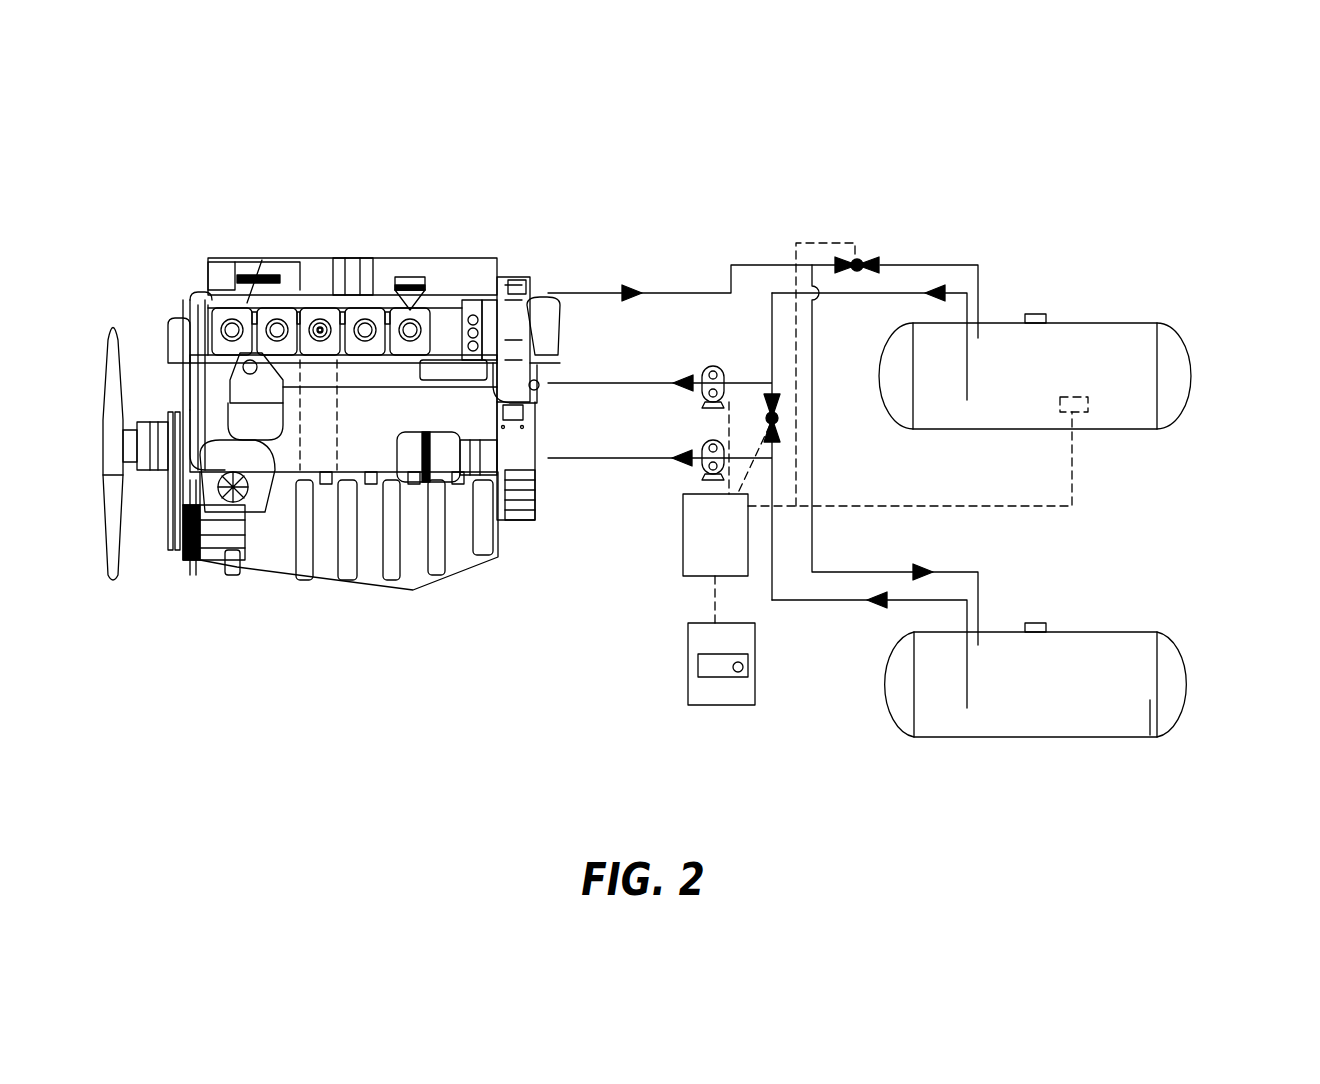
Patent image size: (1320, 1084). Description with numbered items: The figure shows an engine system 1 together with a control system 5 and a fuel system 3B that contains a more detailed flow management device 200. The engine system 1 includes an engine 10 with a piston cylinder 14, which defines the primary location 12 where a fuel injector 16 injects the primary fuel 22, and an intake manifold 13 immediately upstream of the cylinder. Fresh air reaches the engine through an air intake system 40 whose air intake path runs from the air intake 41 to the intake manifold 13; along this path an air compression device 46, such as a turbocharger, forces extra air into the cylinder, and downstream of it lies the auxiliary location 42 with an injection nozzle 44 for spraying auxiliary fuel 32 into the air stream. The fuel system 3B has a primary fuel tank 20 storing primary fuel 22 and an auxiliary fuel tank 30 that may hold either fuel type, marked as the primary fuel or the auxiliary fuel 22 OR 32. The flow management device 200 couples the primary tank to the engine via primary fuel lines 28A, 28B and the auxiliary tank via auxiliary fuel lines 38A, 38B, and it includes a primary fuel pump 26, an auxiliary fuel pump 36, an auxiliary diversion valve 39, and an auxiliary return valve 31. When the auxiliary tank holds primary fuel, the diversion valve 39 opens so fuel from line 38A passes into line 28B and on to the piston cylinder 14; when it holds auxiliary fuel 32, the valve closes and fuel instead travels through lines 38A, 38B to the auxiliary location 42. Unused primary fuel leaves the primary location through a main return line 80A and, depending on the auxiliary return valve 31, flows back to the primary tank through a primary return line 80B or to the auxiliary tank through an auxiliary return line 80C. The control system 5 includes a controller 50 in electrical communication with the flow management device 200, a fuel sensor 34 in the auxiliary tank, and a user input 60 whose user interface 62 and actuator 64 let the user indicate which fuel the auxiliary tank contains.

The engine system 1 is at (232, 128).
The fuel system 3B is at (738, 125).
The flow management device 200 is at (712, 192).
The control system 5 is at (625, 538).
The engine 10 is at (222, 298).
The primary location 12 is at (322, 330).
The intake manifold 13 is at (387, 300).
The piston cylinder 14 is at (320, 435).
The fuel injector 16 is at (322, 330).
The air intake system 40 is at (520, 290).
The air intake 41 is at (517, 290).
The auxiliary location 42 is at (530, 385).
The injection nozzle 44 is at (531, 385).
The air compression device 46 is at (543, 290).
The primary fuel tank 20 is at (1128, 632).
The primary fuel 22 is at (1128, 737).
The primary fuel or auxiliary fuel 22 OR 32 is at (1135, 418).
The auxiliary fuel 32 is at (1150, 435).
The auxiliary fuel tank 30 is at (1135, 323).
The fuel sensor 34 is at (1067, 412).
The auxiliary return valve 31 is at (860, 258).
The auxiliary fuel pump 36 is at (710, 372).
The auxiliary diversion valve 39 is at (768, 412).
The primary fuel pump 26 is at (710, 466).
The primary fuel line 28A is at (790, 605).
The primary fuel line 28B is at (634, 458).
The auxiliary fuel line 38A is at (910, 295).
The auxiliary fuel line 38B is at (652, 383).
The main return line 80A is at (660, 292).
The primary return line 80B is at (814, 470).
The auxiliary return line 80C is at (950, 262).
The controller 50 is at (698, 577).
The user input 60 is at (706, 705).
The user interface 62 is at (712, 677).
The actuator 64 is at (736, 672).